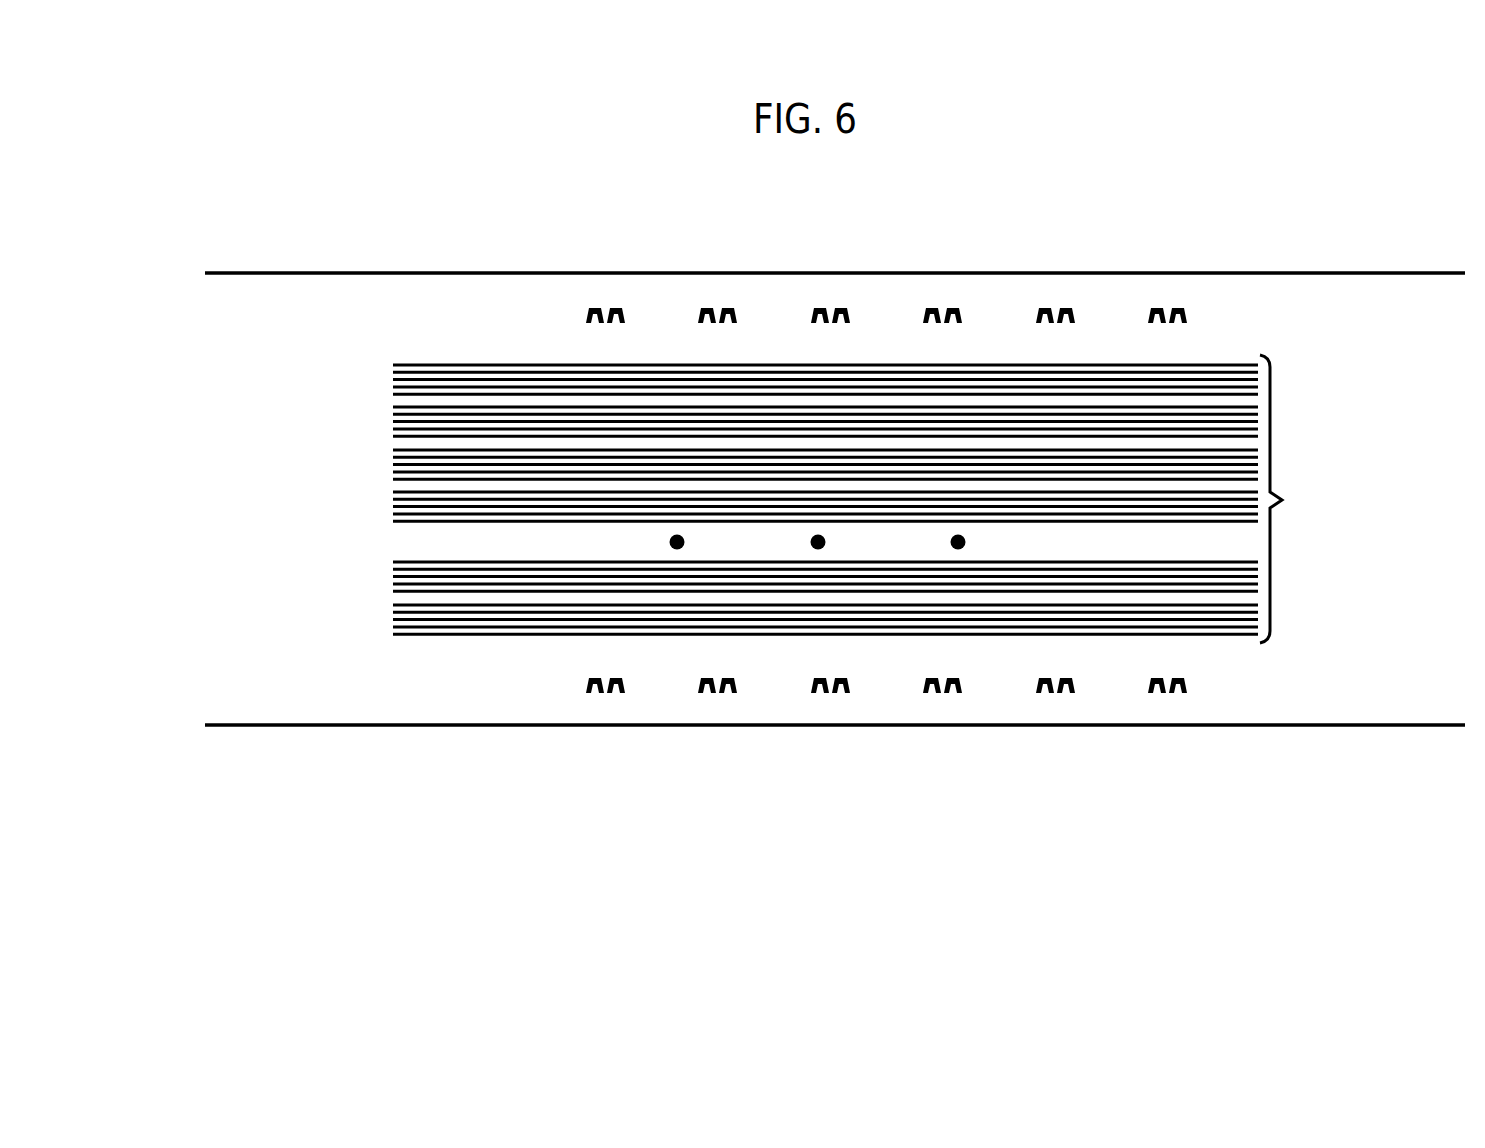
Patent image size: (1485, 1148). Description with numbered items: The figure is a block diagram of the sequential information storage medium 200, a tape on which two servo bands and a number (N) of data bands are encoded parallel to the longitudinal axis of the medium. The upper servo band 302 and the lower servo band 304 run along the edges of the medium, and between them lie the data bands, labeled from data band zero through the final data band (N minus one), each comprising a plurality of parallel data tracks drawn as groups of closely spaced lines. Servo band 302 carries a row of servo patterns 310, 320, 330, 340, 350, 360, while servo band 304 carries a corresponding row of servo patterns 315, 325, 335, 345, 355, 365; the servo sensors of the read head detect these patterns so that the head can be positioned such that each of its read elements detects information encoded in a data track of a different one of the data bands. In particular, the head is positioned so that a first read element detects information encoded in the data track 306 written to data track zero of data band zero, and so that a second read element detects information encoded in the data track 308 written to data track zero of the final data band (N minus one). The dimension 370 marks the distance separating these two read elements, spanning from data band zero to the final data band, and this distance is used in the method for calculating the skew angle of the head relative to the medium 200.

The sequential information storage medium 200 is at (791, 549).
The servo band 302 is at (831, 279).
The servo band 304 is at (791, 717).
The data track 306 is at (395, 365).
The data track 308 is at (711, 744).
The servo pattern 310 is at (601, 306).
The servo pattern 320 is at (713, 306).
The servo pattern 330 is at (826, 306).
The servo pattern 340 is at (938, 306).
The servo pattern 350 is at (1051, 306).
The servo pattern 360 is at (1163, 306).
The servo pattern 315 is at (600, 694).
The servo pattern 325 is at (712, 694).
The servo pattern 335 is at (825, 694).
The servo pattern 345 is at (937, 694).
The servo pattern 355 is at (1050, 694).
The servo pattern 365 is at (1162, 694).
The distance 370 is at (768, 516).